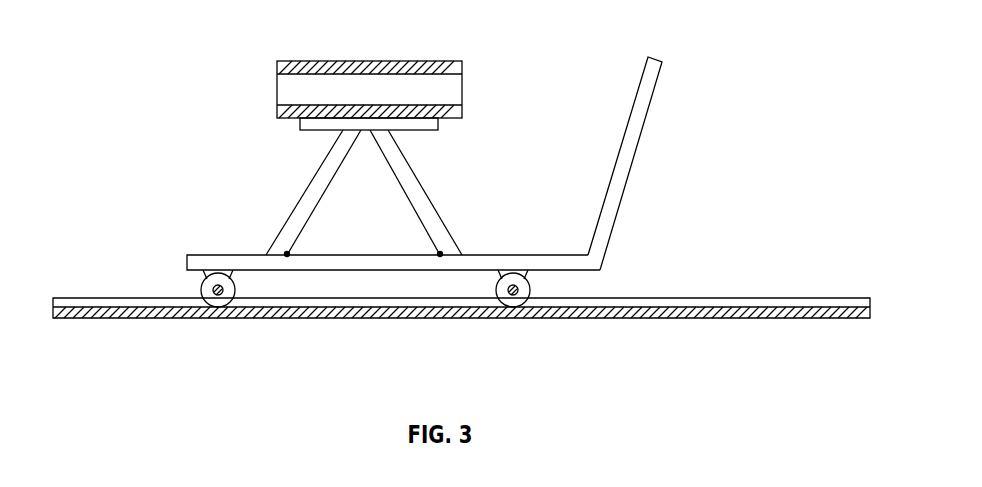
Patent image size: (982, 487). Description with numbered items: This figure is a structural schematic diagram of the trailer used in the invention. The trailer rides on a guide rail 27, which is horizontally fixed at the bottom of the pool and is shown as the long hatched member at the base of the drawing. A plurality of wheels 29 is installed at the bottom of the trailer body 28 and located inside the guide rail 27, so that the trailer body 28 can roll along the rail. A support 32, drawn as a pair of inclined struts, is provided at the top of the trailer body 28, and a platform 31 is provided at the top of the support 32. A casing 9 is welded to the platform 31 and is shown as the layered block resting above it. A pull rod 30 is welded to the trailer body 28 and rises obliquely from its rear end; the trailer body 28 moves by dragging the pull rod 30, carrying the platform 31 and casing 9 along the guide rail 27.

The casing 9 is at (400, 62).
The platform 31 is at (422, 125).
The support 32 is at (428, 198).
The pull rod 30 is at (620, 187).
The trailer body 28 is at (362, 263).
The wheels 29 is at (223, 317).
The guide rail 27 is at (453, 308).